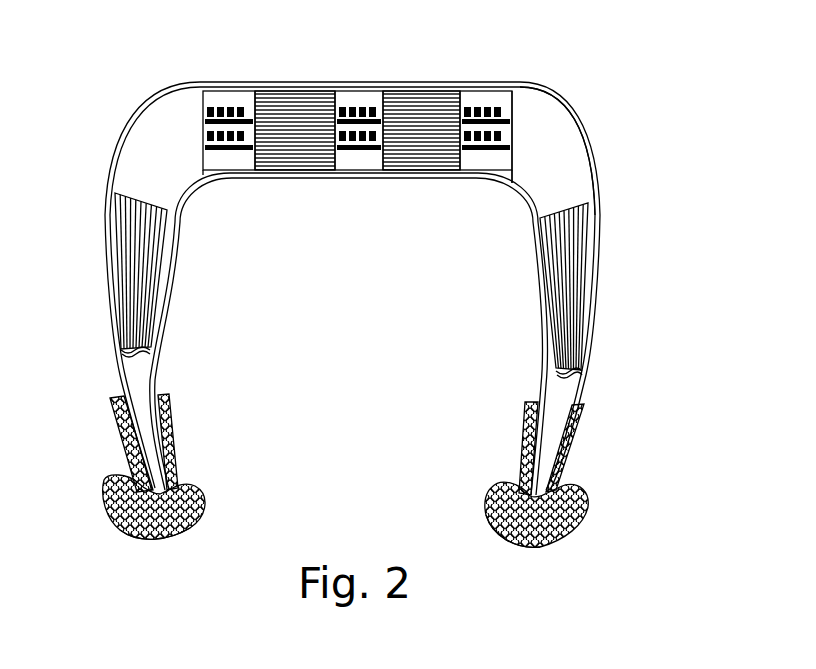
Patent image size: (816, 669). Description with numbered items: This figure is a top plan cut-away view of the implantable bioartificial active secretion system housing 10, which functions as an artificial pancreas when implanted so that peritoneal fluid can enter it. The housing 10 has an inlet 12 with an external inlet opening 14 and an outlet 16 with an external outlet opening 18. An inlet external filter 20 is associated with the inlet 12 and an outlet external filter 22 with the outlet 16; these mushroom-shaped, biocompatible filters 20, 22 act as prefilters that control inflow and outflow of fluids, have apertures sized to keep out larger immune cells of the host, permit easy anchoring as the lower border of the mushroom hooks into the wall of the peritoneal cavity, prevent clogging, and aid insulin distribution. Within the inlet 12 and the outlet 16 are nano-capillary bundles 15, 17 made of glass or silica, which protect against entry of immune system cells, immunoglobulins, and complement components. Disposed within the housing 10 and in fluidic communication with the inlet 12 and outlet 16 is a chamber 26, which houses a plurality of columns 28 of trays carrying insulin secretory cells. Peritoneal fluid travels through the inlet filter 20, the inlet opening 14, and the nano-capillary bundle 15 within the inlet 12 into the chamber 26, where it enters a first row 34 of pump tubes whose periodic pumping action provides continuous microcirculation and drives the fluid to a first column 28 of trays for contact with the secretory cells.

The implantable bioartificial active secretion system housing 10 is at (650, 134).
The inlet 12 is at (118, 384).
The external inlet opening 14 is at (200, 524).
The nano-capillary bundle 15 is at (122, 238).
The outlet 16 is at (550, 428).
The nano-capillary bundle 17 is at (568, 249).
The external outlet opening 18 is at (490, 530).
The inlet external filter 20 is at (140, 535).
The outlet external filter 22 is at (517, 543).
The chamber 26 is at (540, 135).
The column 28 is at (295, 100).
The first row 34 is at (205, 103).